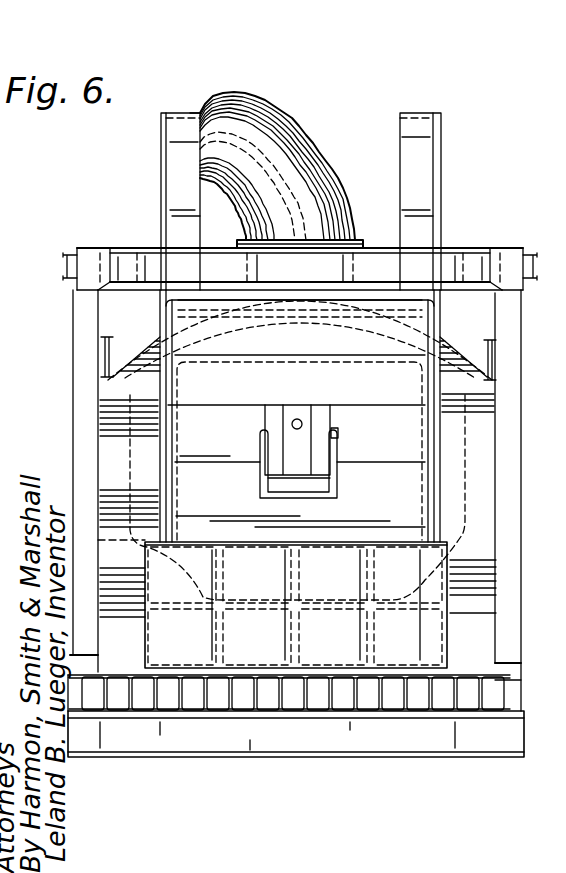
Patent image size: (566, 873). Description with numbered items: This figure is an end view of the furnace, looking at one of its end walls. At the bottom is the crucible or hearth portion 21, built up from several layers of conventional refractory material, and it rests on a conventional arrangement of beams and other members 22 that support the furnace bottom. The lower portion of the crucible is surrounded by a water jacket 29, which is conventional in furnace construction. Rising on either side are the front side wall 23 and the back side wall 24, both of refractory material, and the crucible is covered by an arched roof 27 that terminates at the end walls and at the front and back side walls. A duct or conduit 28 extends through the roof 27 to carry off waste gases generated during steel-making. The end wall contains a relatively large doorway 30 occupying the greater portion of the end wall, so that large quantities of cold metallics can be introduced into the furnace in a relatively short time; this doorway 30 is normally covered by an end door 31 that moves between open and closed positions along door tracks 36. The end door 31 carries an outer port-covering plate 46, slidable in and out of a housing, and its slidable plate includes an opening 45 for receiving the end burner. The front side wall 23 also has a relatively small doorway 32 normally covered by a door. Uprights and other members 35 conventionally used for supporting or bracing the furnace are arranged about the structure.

The bottom crucible or hearth portion 21 is at (317, 598).
The arrangement of beams and other members 22 is at (250, 737).
The front side wall 23 is at (96, 396).
The back side wall 24 is at (478, 414).
The arched roof 27 is at (148, 335).
The duct or conduit 28 is at (300, 138).
The water jacket 29 is at (233, 613).
The doorway 30 is at (397, 365).
The end door 31 is at (292, 356).
The side doorway 32 is at (121, 437).
The uprights and other members 35 is at (86, 245).
The door tracks 36 is at (162, 170).
The opening 45 is at (288, 408).
The outer port-covering plate 46 is at (338, 432).